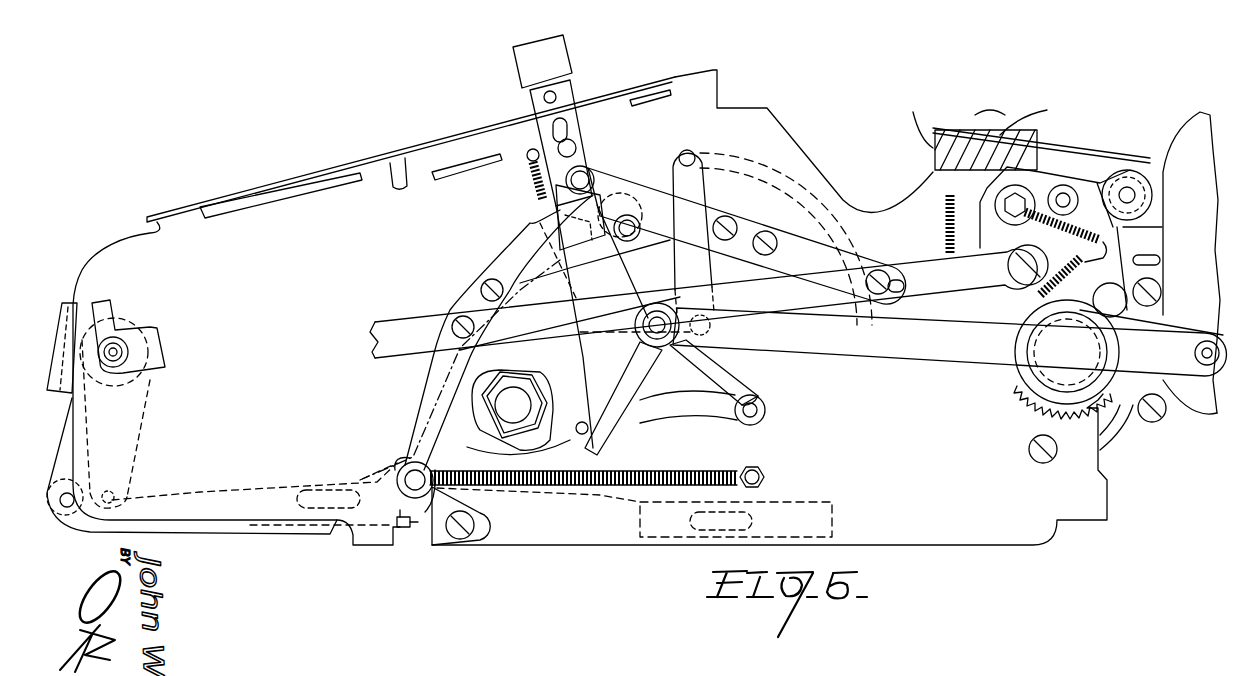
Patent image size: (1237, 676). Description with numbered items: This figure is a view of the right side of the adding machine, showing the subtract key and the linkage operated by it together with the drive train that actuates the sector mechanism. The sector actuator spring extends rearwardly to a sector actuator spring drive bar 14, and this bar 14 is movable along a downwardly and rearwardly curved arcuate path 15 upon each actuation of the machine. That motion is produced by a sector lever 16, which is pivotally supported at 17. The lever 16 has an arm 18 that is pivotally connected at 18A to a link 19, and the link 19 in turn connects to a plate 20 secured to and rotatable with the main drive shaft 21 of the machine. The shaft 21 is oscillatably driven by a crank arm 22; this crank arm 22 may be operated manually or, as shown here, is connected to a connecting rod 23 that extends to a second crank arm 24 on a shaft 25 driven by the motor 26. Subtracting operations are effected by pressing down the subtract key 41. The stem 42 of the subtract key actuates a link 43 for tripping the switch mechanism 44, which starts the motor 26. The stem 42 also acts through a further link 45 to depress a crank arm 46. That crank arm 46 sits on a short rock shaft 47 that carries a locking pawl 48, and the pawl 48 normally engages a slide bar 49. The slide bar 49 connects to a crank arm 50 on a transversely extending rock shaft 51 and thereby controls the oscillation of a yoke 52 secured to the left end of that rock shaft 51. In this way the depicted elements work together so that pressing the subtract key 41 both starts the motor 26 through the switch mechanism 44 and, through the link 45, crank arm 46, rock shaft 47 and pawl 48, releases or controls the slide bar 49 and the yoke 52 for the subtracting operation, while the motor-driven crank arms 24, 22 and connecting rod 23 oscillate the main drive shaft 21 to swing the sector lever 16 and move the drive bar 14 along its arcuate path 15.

The sector actuator spring drive bar 14 is at (684, 150).
The arcuate path 15 is at (818, 198).
The sector lever 16 is at (670, 258).
The pivot 17 is at (717, 327).
The arm 18 is at (737, 377).
The pivotal connection 18A is at (757, 410).
The link 19 is at (682, 402).
The plate 20 is at (575, 437).
The main drive shaft 21 is at (517, 398).
The crank arm 22 is at (630, 364).
The connecting rod 23 is at (917, 353).
The crank arm 24 is at (1127, 380).
The shaft 25 is at (1030, 393).
The motor 26 is at (1203, 397).
The subtract key 41 is at (563, 93).
The stem 42 is at (580, 140).
The link 43 is at (707, 207).
The switch mechanism 44 is at (1127, 150).
The link 45 is at (470, 293).
The crank arm 46 is at (468, 506).
The short rock shaft 47 is at (463, 538).
The locking pawl 48 is at (405, 528).
The slide bar 49 is at (275, 485).
The crank arm 50 is at (63, 440).
The rock shaft 51 is at (130, 350).
The yoke 52 is at (60, 302).